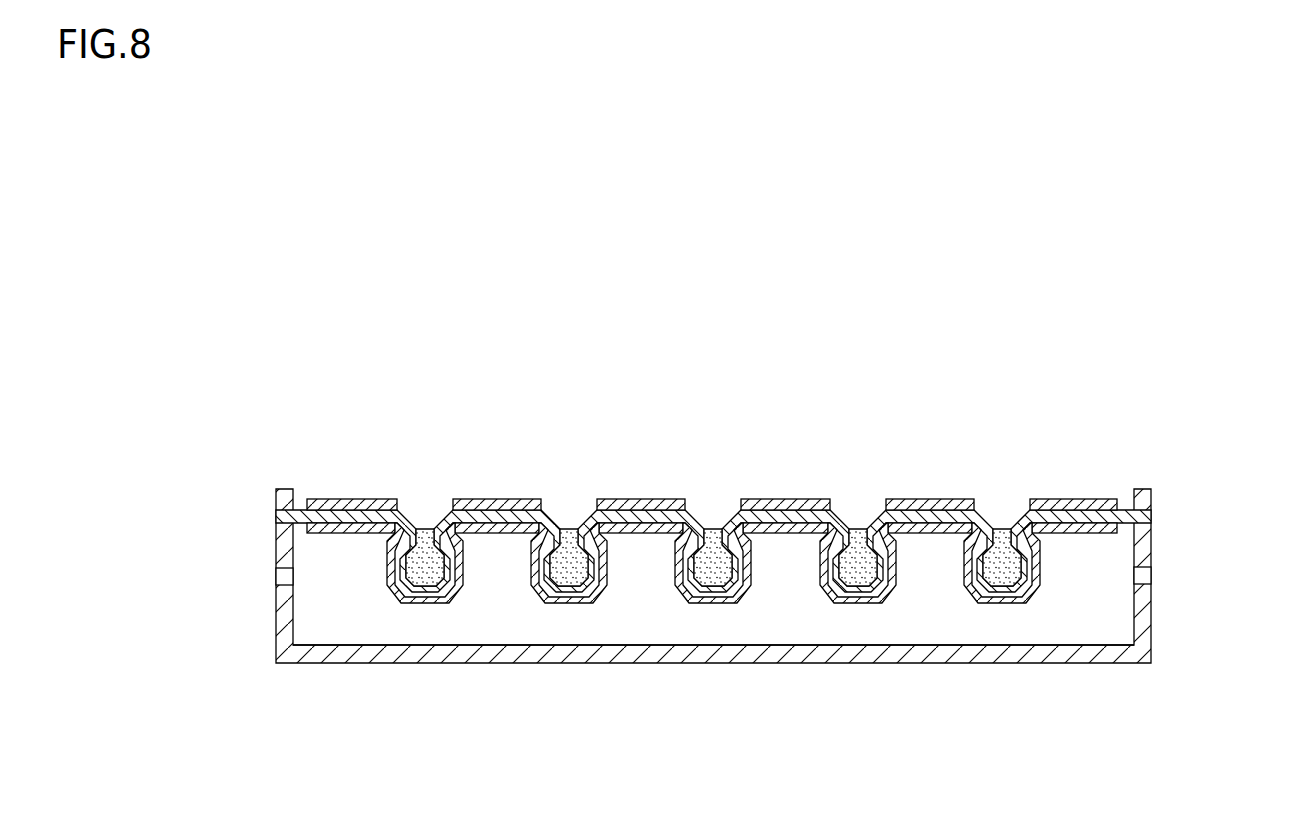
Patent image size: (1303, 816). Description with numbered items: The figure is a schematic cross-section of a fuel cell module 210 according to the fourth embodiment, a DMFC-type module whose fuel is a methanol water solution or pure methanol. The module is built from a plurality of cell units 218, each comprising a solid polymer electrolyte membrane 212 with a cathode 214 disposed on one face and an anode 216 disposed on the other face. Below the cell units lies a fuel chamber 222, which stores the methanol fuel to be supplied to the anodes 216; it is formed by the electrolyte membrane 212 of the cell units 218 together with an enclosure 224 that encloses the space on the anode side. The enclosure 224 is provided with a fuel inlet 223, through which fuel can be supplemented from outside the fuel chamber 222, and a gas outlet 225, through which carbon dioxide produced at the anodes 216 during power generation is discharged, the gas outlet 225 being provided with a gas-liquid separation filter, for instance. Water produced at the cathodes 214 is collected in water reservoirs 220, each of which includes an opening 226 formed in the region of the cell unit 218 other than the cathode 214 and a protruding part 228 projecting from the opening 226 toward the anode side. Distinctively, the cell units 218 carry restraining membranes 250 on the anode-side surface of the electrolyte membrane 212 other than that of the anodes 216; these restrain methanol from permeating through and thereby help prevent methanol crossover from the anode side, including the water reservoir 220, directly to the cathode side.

The fuel cell module 210 is at (730, 530).
The solid polymer electrolyte membrane 212 is at (1124, 510).
The cathode 214 is at (1070, 500).
The anode 216 is at (1093, 533).
The cell unit 218 is at (1072, 549).
The water reservoir 220 is at (900, 545).
The fuel chamber 222 is at (644, 624).
The fuel inlet 223 is at (1145, 575).
The enclosure 224 is at (1150, 630).
The gas outlet 225 is at (278, 578).
The opening 226 is at (866, 508).
The protruding part 228 is at (906, 582).
The restraining membrane 250 is at (300, 528).